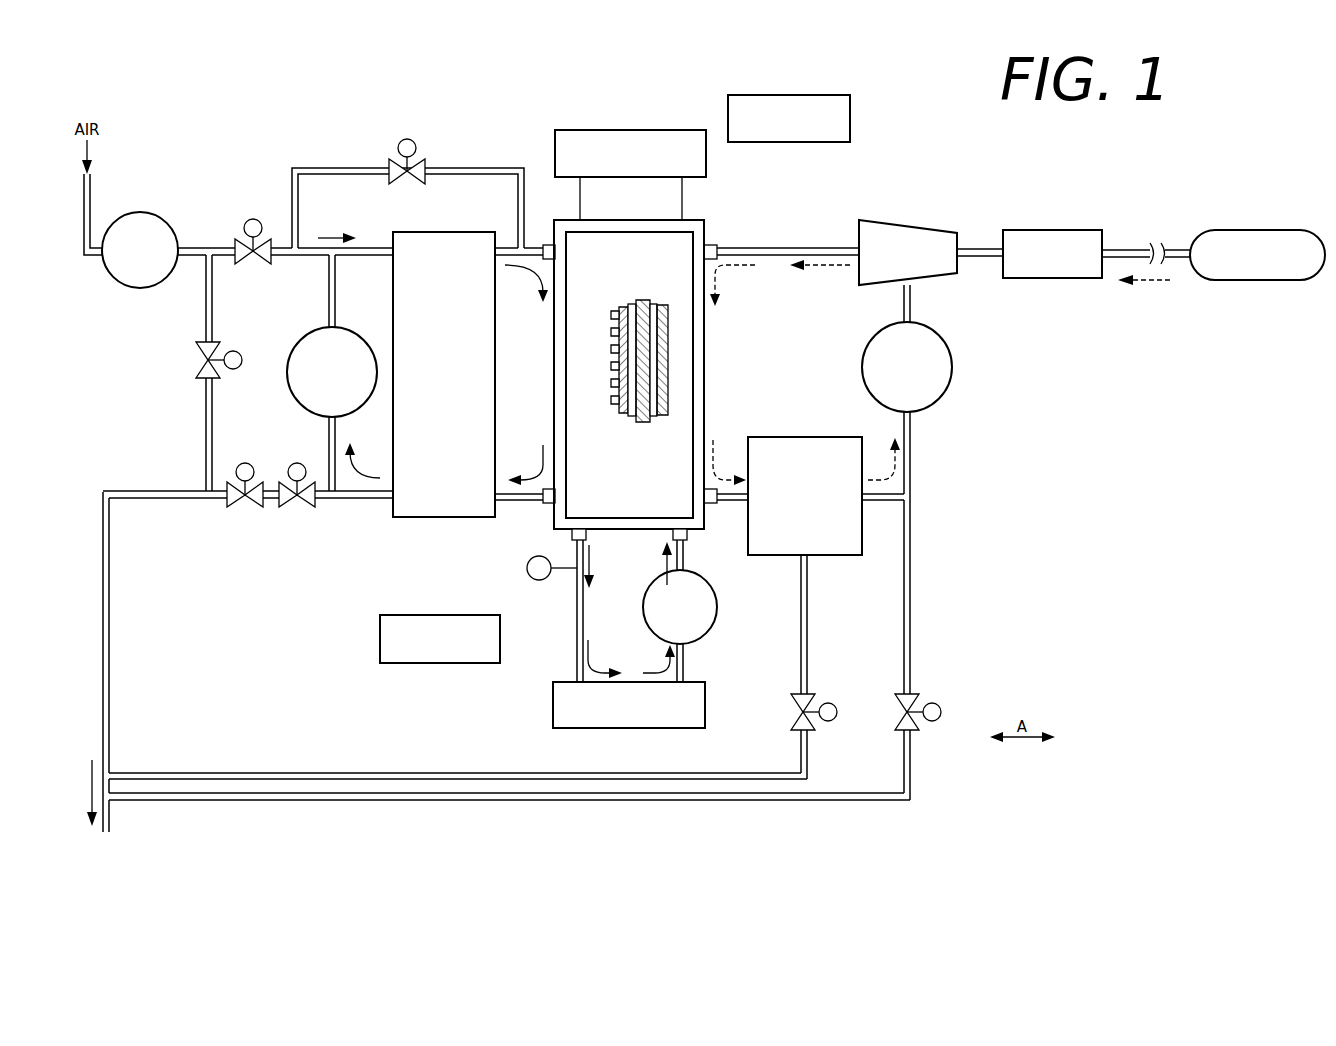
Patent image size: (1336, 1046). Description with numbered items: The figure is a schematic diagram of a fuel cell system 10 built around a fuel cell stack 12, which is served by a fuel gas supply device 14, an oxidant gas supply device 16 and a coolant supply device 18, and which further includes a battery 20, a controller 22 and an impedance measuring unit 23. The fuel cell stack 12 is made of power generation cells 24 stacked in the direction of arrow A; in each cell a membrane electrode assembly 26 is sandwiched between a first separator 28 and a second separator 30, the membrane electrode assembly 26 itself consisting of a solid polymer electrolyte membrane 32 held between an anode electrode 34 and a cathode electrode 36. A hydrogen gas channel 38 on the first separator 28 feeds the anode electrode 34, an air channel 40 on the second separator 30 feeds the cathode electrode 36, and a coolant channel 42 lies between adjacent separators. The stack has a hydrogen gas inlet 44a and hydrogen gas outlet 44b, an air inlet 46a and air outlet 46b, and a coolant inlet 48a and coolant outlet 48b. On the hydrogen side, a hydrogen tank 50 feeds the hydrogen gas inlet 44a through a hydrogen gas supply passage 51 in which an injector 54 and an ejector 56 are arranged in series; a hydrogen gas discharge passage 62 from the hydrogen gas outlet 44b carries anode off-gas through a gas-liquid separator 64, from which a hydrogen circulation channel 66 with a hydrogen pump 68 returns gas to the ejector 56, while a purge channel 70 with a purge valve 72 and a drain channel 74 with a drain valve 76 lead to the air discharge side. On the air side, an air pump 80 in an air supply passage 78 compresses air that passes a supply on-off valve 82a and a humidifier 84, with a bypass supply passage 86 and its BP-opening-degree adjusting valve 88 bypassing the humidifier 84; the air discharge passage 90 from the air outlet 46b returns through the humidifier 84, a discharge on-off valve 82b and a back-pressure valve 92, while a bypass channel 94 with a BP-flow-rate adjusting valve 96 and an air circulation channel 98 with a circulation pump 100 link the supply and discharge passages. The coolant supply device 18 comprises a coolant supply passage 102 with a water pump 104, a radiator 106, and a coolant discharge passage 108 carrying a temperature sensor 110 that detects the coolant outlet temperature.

The fuel cell system 10 is at (1202, 161).
The fuel cell stack 12 is at (655, 350).
The fuel gas supply device 14 is at (1017, 470).
The oxidant gas supply device 16 is at (399, 169).
The coolant supply device 18 is at (624, 648).
The battery 20 is at (446, 615).
The controller 22 is at (792, 94).
The impedance measuring unit 23 is at (651, 129).
The power generation cell 24 is at (680, 234).
The membrane electrode assembly 26 is at (662, 349).
The first separator 28 is at (668, 325).
The second separator 30 is at (617, 310).
The solid polymer electrolyte membrane 32 is at (643, 299).
The anode electrode 34 is at (654, 303).
The cathode electrode 36 is at (630, 303).
The hydrogen gas channel 38 is at (668, 375).
The air channel 40 is at (622, 330).
The coolant channel 42 is at (618, 400).
The hydrogen gas inlet 44a is at (717, 248).
The hydrogen gas outlet 44b is at (714, 505).
The air inlet 46a is at (541, 244).
The air outlet 46b is at (546, 506).
The coolant inlet 48a is at (672, 539).
The coolant outlet 48b is at (588, 540).
The hydrogen tank 50 is at (1259, 230).
The hydrogen gas supply passage 51 is at (1175, 249).
The injector 54 is at (1054, 230).
The ejector 56 is at (906, 228).
The hydrogen gas discharge passage 62 is at (878, 501).
The gas-liquid separator 64 is at (815, 437).
The hydrogen circulation channel 66 is at (910, 443).
The hydrogen pump 68 is at (952, 364).
The purge channel 70 is at (910, 525).
The purge valve 72 is at (931, 703).
The drain channel 74 is at (384, 773).
The drain valve 76 is at (829, 703).
The air supply passage 78 is at (195, 247).
The air pump 80 is at (145, 212).
The supply on-off valve 82a is at (253, 219).
The discharge on-off valve 82b is at (298, 462).
The humidifier 84 is at (445, 232).
The bypass supply passage 86 is at (476, 168).
The BP-opening-degree adjusting valve 88 is at (408, 139).
The air discharge passage 90 is at (503, 500).
The back-pressure valve 92 is at (246, 462).
The bypass channel 94 is at (212, 288).
The BP-flow-rate adjusting valve 96 is at (235, 350).
The air circulation channel 98 is at (329, 283).
The circulation pump 100 is at (311, 331).
The coolant supply passage 102 is at (683, 558).
The water pump 104 is at (716, 626).
The radiator 106 is at (553, 690).
The coolant discharge passage 108 is at (577, 618).
The temperature sensor 110 is at (528, 576).